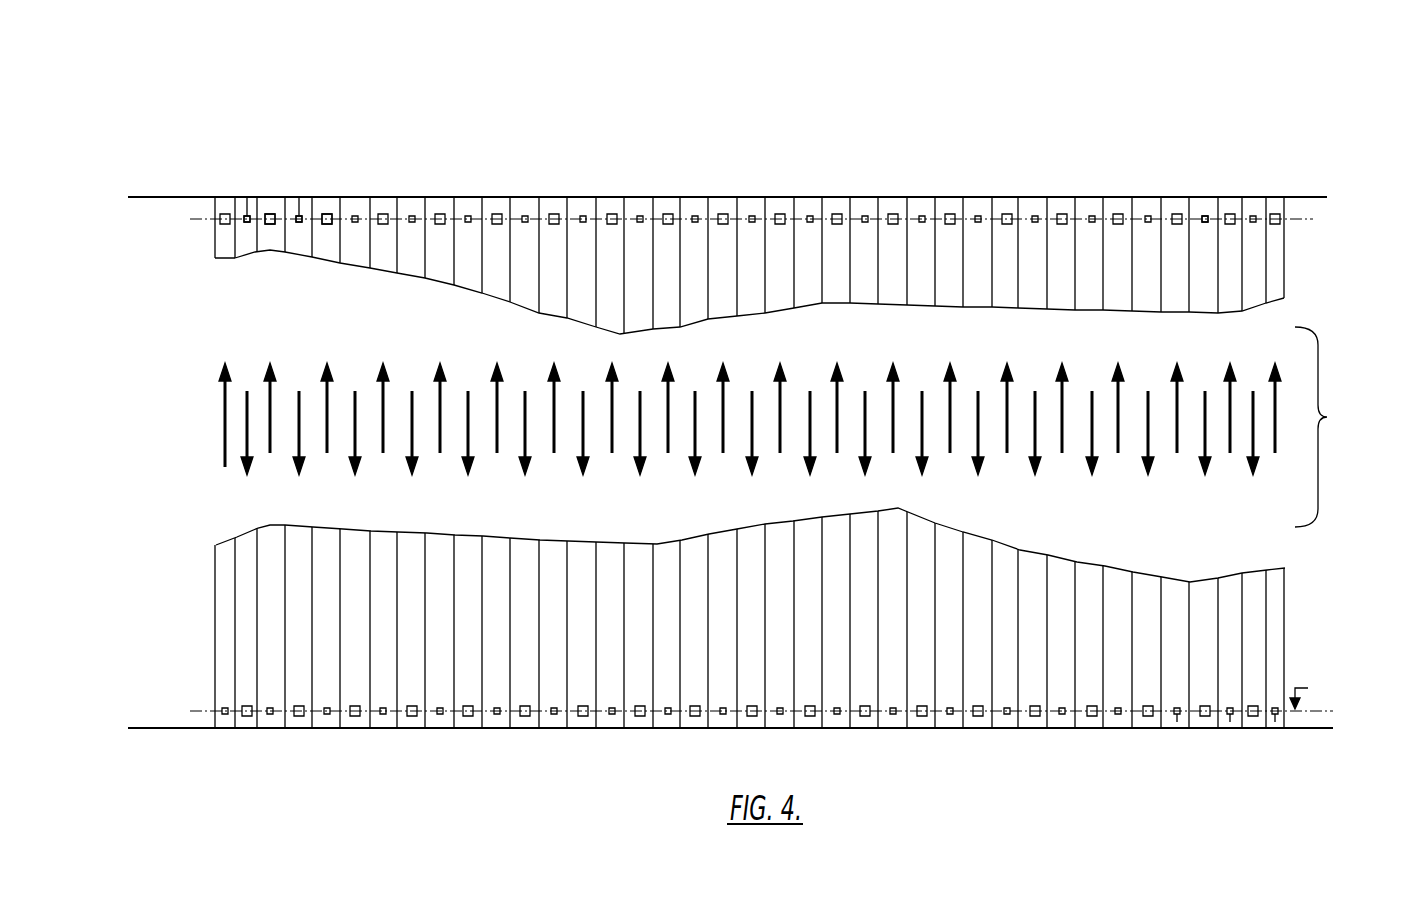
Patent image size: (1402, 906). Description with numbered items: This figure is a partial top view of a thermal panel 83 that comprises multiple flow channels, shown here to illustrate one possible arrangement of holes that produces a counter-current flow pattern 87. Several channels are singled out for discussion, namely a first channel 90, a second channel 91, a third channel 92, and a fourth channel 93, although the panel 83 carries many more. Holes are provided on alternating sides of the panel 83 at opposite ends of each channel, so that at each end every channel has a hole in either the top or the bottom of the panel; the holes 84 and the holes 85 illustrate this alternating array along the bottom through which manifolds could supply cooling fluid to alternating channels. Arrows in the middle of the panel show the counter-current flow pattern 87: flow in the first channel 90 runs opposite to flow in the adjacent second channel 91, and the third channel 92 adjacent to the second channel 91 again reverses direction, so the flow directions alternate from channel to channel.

The panel 83 is at (130, 198).
The holes 84 is at (299, 228).
The holes 85 is at (327, 213).
The counter-current flow pattern 87 is at (1327, 417).
The first channel 90 is at (1276, 207).
The second channel 91 is at (1253, 207).
The third channel 92 is at (1228, 207).
The fourth channel 93 is at (1202, 207).